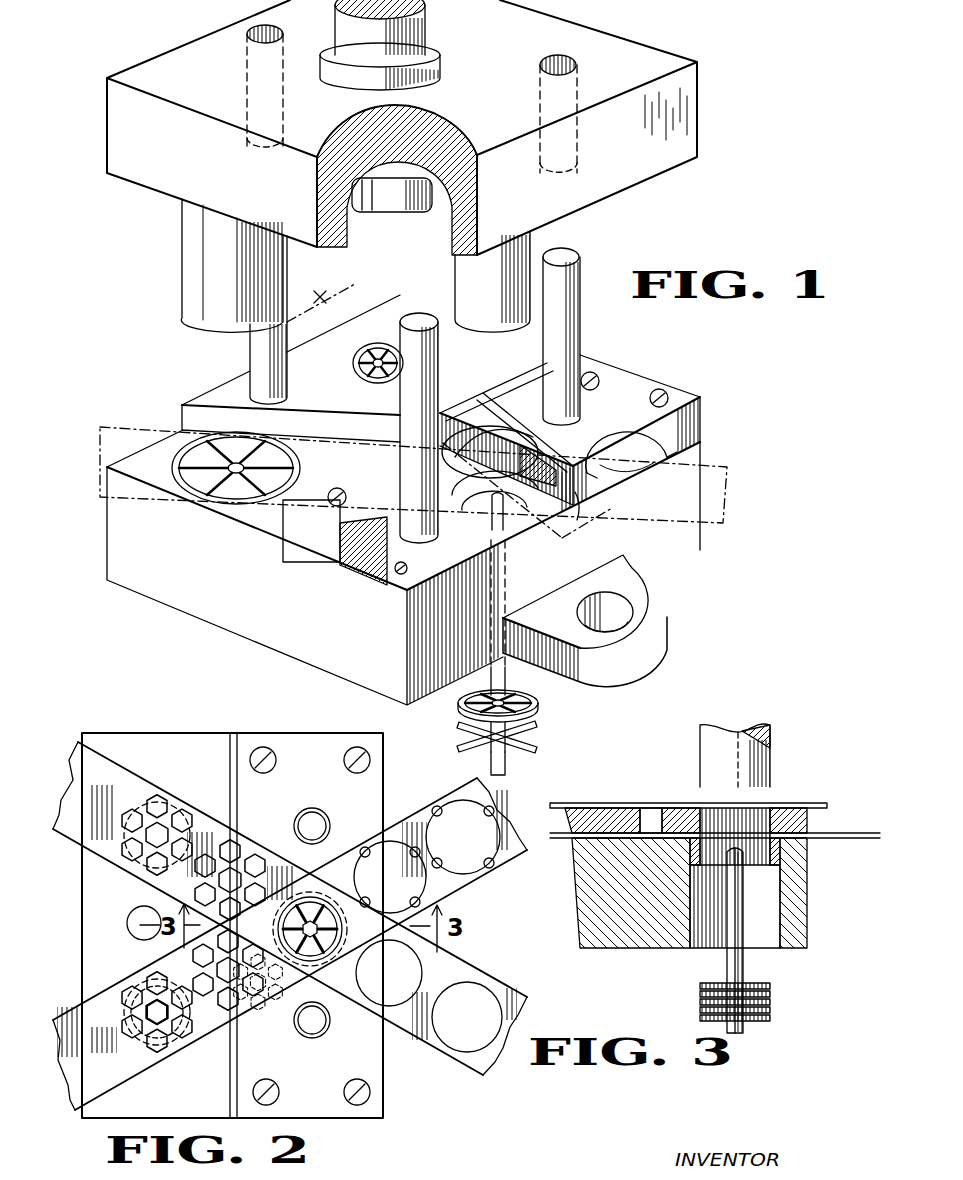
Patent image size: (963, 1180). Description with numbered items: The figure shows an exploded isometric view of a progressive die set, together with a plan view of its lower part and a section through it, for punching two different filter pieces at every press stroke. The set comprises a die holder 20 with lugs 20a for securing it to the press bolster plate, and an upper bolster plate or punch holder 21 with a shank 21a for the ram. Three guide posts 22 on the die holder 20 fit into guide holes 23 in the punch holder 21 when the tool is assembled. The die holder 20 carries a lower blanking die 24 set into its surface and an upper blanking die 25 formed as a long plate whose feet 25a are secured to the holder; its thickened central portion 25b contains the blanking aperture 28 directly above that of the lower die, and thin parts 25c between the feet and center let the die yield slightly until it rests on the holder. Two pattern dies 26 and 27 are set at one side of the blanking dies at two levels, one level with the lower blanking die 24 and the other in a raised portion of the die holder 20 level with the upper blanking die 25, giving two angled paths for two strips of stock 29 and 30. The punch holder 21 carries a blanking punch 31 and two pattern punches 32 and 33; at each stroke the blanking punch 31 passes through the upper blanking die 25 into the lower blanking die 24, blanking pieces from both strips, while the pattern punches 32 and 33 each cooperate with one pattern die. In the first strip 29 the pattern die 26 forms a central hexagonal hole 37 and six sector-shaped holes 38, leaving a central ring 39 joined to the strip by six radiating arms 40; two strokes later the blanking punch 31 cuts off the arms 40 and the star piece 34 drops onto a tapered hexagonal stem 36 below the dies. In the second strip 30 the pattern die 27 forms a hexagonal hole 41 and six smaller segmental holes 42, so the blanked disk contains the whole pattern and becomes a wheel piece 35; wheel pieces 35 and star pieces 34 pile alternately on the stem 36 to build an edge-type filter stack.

In FIG. 1, the die holder 20 is at (123, 530).
In FIG. 2, the die holder 20 is at (189, 742).
In FIG. 3, the die holder 20 is at (800, 920).
In FIG. 1, the lugs 20a is at (658, 608).
In FIG. 1, the punch holder 21 is at (688, 125).
In FIG. 1, the shank 21a is at (428, 36).
In FIG. 1, the guide posts 22 is at (258, 350).
In FIG. 2, the guide posts 22 is at (330, 792).
In FIG. 1, the guide holes 23 is at (248, 32).
In FIG. 1, the lower blanking die 24 is at (497, 503).
In FIG. 3, the lower blanking die 24 is at (782, 868).
In FIG. 1, the upper blanking die 25 is at (620, 397).
In FIG. 3, the upper blanking die 25 is at (785, 806).
In FIG. 1, the feet 25a is at (700, 440).
In FIG. 1, the central portion 25b is at (578, 497).
In FIG. 1, the thin parts 25c is at (640, 437).
In FIG. 1, the pattern die 26 is at (226, 502).
In FIG. 1, the pattern die 27 is at (356, 360).
In FIG. 1, the aperture 28 is at (540, 448).
In FIG. 1, the strip of stock 29 is at (127, 426).
In FIG. 2, the strip of stock 29 is at (80, 1022).
In FIG. 3, the strip of stock 29 is at (832, 839).
In FIG. 1, the strip of stock 30 is at (324, 292).
In FIG. 2, the strip of stock 30 is at (80, 750).
In FIG. 3, the strip of stock 30 is at (670, 789).
In FIG. 1, the blanking punch 31 is at (540, 246).
In FIG. 3, the blanking punch 31 is at (772, 746).
In FIG. 1, the pattern punch 32 is at (190, 274).
In FIG. 1, the pattern punch 33 is at (378, 208).
In FIG. 1, the star piece 34 is at (540, 735).
In FIG. 3, the star piece 34 is at (770, 1010).
In FIG. 1, the wheel piece 35 is at (541, 705).
In FIG. 3, the wheel piece 35 is at (700, 1002).
In FIG. 1, the hexagonal stem 36 is at (507, 764).
In FIG. 2, the hexagonal stem 36 is at (313, 926).
In FIG. 3, the hexagonal stem 36 is at (727, 962).
In FIG. 2, the central hexagonal hole 37 is at (160, 990).
In FIG. 2, the holes 38 is at (162, 975).
In FIG. 2, the central ring 39 is at (165, 1040).
In FIG. 2, the radiating arms 40 is at (150, 1040).
In FIG. 2, the hexagonal hole 41 is at (160, 828).
In FIG. 2, the segmental holes 42 is at (150, 814).